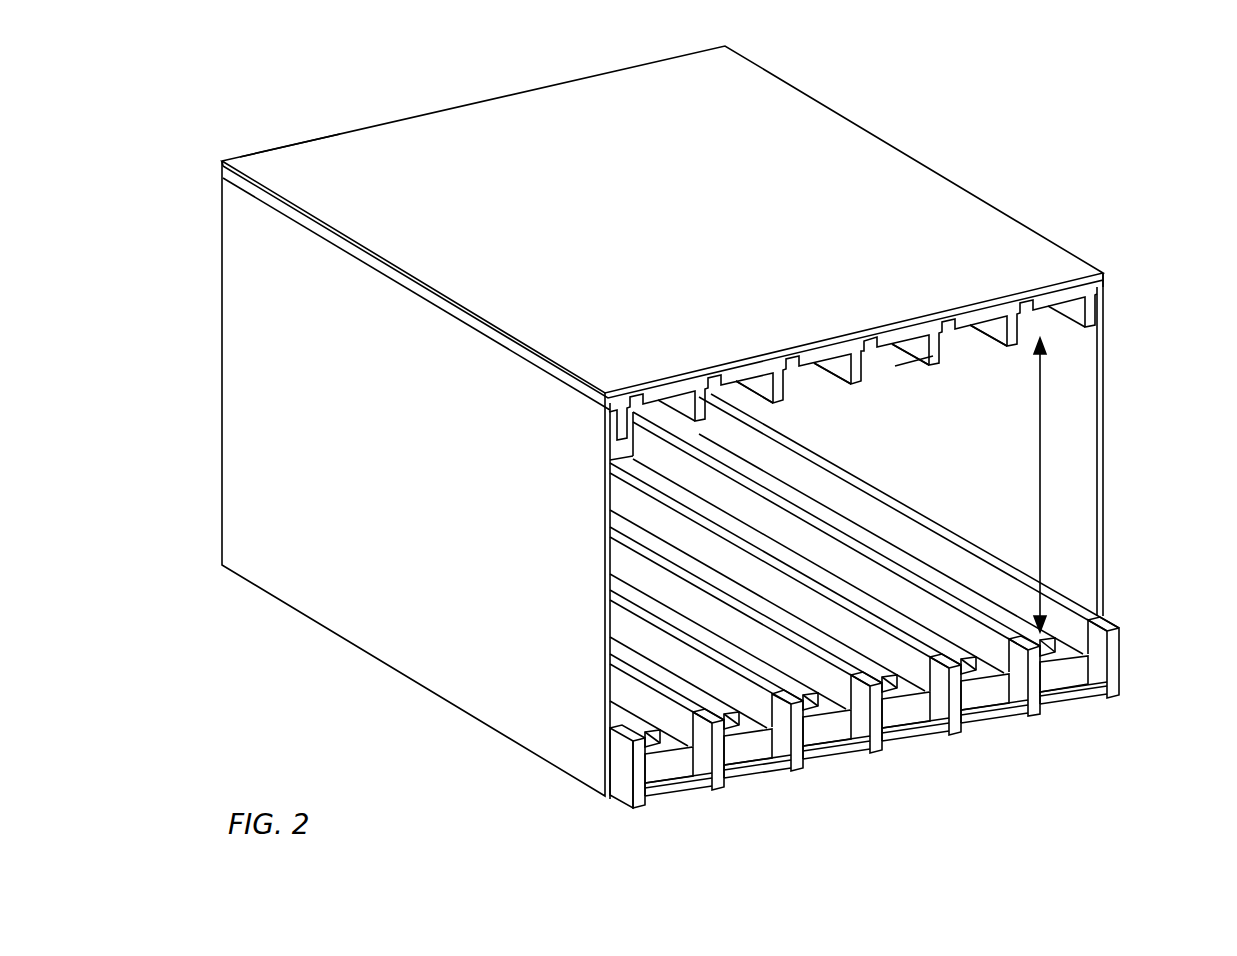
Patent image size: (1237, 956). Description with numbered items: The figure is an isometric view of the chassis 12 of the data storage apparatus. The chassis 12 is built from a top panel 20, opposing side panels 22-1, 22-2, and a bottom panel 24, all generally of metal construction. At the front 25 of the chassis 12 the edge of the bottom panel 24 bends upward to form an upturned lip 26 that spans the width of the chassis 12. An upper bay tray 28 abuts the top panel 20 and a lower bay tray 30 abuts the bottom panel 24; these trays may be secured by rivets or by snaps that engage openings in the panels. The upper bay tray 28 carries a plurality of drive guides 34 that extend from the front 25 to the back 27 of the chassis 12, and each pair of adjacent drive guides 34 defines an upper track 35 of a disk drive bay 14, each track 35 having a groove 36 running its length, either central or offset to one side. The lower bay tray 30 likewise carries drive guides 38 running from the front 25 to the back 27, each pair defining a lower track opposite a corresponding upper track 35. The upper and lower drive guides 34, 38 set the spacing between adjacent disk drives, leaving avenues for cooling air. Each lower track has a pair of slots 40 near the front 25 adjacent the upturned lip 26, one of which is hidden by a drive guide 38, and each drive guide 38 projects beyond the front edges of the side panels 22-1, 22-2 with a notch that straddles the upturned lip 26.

The chassis 12 is at (1162, 152).
The disk drive bay 14 is at (1051, 485).
The top panel 20 is at (699, 221).
The side panel 22-1 is at (432, 504).
The side panel 22-2 is at (1105, 482).
The bottom panel 24 is at (617, 820).
The front 25 is at (975, 830).
The upturned lip 26 is at (824, 731).
The back 27 is at (302, 134).
The upper bay tray 28 is at (1105, 306).
The lower bay tray 30 is at (1121, 661).
The drive guide 34 is at (1014, 348).
The upper track 35 is at (906, 378).
The groove 36 is at (878, 361).
The drive guide 38 is at (785, 752).
The slot 40 is at (920, 681).